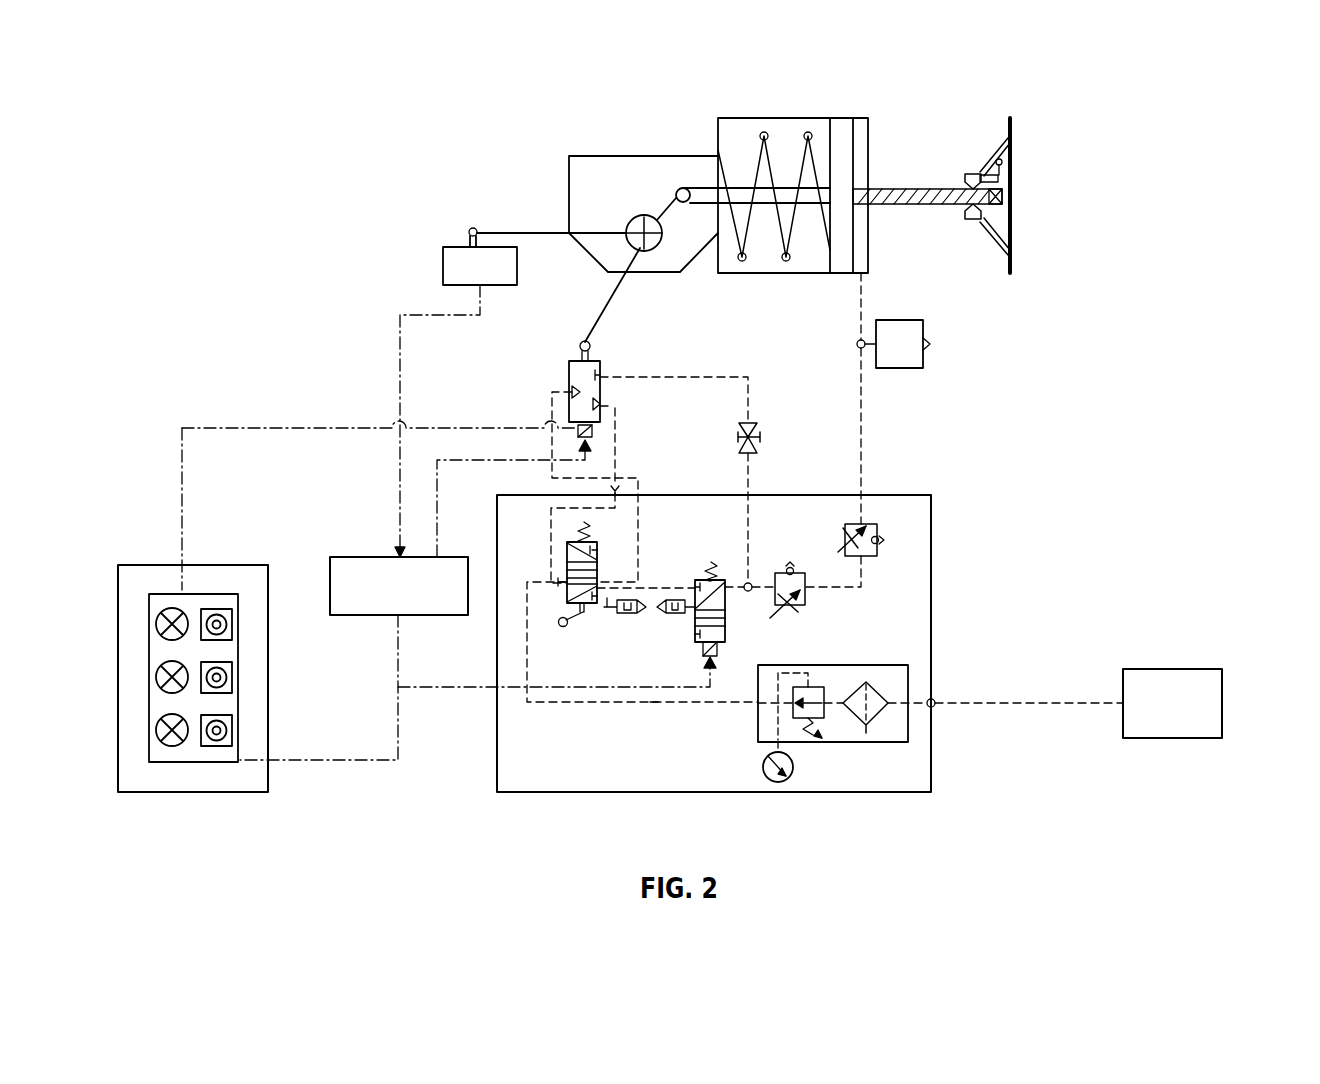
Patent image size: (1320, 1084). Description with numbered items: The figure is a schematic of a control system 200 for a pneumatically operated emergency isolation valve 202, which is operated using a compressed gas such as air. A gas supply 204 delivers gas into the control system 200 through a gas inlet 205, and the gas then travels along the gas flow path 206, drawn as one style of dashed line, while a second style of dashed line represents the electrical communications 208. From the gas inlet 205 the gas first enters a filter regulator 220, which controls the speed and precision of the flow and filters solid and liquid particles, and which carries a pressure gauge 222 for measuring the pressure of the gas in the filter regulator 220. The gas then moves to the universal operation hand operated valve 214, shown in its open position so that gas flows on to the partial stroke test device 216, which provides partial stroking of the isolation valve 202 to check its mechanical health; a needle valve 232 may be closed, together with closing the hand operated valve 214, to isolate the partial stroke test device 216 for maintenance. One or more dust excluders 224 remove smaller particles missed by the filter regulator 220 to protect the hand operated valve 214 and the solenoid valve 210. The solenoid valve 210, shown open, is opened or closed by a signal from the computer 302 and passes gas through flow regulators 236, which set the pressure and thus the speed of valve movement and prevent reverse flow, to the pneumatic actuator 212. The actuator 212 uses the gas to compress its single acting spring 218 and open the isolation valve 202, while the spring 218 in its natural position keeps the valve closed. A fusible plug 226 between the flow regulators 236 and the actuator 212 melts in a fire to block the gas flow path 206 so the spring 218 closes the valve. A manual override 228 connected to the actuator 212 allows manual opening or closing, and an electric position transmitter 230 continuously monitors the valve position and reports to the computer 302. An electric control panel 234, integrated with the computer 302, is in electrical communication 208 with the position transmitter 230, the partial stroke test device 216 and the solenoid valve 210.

The control system 200 is at (950, 452).
The isolation valve 202 is at (646, 214).
The gas supply 204 is at (1222, 702).
The gas inlet 205 is at (935, 700).
The gas flow path 206 is at (653, 707).
The electrical communications 208 is at (181, 517).
The solenoid valve 210 is at (712, 562).
The pneumatic actuator 212 is at (569, 185).
The universal operation hand operated valve (UOHOV) 214 is at (582, 614).
The partial stroke test device (PSTD) 216 is at (600, 370).
The spring 218 is at (767, 142).
The filter regulator 220 is at (832, 665).
The pressure gauge 222 is at (780, 784).
The dust excluder 224 is at (665, 616).
The fusible plug 226 is at (923, 332).
The manual override 228 is at (1017, 210).
The electric position transmitter (EPT) 230 is at (458, 247).
The needle valve 232 is at (757, 450).
The electric control panel 234 is at (188, 762).
The flow regulators 236 is at (880, 530).
The computer 302 is at (371, 557).